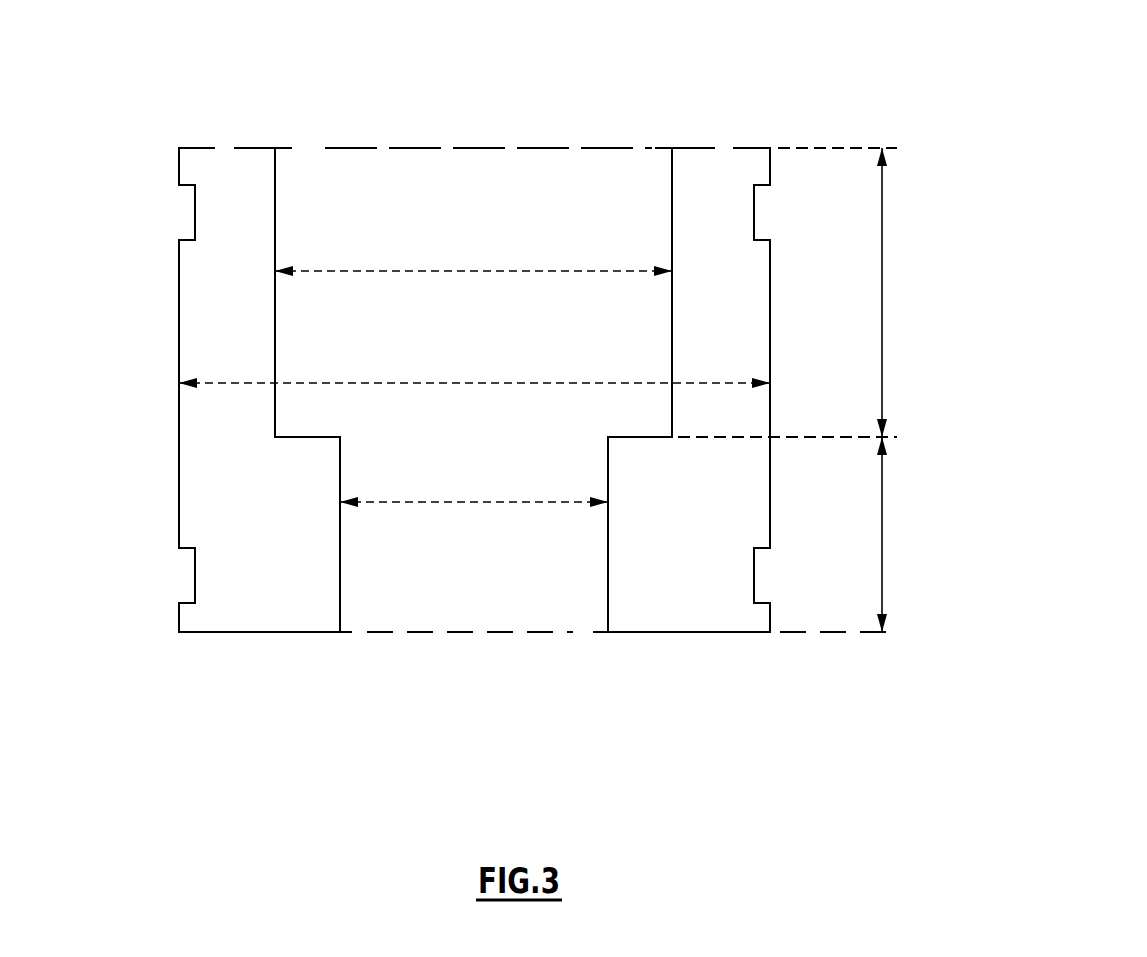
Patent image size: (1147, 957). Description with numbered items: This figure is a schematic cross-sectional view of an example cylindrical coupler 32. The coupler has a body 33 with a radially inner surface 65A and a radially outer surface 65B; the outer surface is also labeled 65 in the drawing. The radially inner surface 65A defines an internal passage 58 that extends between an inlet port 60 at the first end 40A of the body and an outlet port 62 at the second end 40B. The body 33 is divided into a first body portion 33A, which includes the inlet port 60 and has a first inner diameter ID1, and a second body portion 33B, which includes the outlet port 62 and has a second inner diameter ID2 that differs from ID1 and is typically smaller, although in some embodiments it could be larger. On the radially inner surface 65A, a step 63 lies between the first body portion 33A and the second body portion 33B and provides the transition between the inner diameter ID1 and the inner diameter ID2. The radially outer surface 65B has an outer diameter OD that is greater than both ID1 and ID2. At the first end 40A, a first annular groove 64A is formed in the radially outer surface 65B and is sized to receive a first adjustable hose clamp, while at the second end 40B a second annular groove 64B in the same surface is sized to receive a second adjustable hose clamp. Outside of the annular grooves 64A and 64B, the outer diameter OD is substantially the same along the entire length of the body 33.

The cylindrical coupler 32 is at (124, 322).
The body 33 is at (213, 279).
The first body portion 33A is at (882, 280).
The second body portion 33B is at (882, 525).
The first end 40A is at (547, 97).
The second end 40B is at (433, 703).
The internal passage 58 is at (487, 421).
The inlet port 60 is at (486, 198).
The outlet port 62 is at (487, 619).
The step 63 is at (298, 438).
The first annular groove 64A is at (183, 210).
The second annular groove 64B is at (183, 573).
The outer surface 65 is at (770, 320).
The radially inner surface 65A is at (275, 362).
The radially outer surface 65B is at (179, 447).
The first inner diameter ID1 is at (462, 274).
The second inner diameter ID2 is at (428, 502).
The outer diameter OD is at (707, 381).